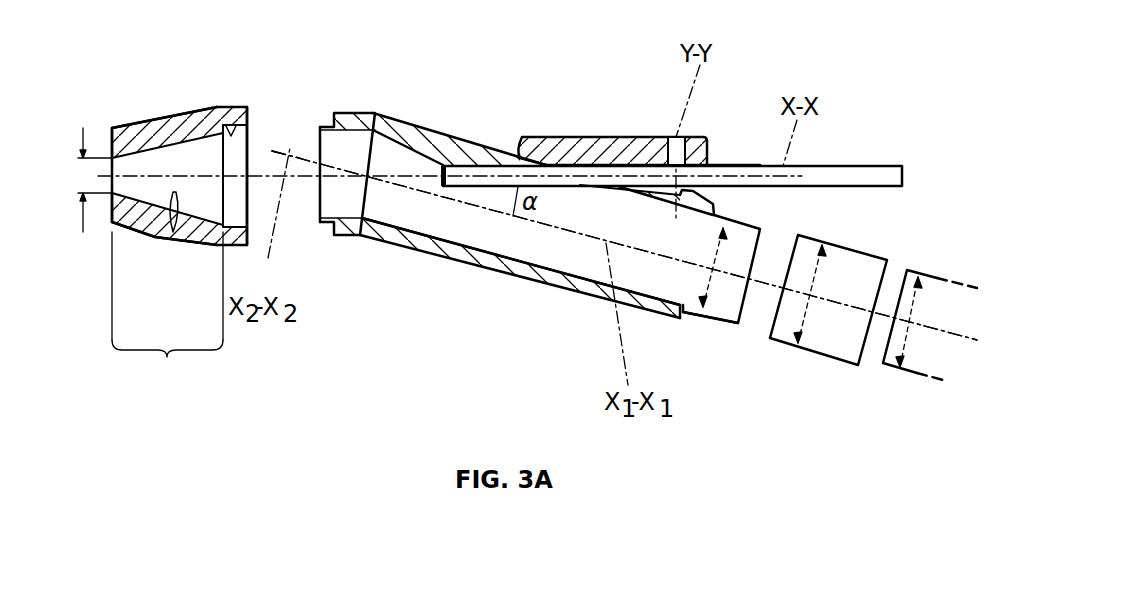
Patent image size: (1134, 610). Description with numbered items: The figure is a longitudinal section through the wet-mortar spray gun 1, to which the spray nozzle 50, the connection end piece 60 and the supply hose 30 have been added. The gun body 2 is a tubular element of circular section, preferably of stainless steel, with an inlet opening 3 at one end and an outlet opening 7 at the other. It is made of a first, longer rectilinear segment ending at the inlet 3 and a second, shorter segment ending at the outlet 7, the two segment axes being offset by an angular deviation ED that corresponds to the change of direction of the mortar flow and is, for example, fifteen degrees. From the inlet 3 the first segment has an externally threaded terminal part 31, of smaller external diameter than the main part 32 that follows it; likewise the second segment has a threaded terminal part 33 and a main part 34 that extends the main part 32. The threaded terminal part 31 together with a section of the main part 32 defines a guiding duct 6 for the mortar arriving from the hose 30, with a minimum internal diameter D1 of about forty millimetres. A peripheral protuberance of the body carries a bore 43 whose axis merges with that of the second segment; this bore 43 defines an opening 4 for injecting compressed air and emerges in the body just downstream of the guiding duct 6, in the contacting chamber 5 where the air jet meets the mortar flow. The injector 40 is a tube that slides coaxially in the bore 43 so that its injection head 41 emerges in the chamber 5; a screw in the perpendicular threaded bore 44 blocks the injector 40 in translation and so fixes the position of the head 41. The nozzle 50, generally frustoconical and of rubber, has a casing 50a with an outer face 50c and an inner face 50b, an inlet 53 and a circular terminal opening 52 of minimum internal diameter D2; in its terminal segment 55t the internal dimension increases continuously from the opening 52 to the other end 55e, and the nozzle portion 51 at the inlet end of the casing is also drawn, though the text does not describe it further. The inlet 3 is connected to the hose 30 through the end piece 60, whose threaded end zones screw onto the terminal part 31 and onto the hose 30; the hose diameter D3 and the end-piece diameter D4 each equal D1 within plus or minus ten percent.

The gun 1 is at (423, 308).
The gun body 2 is at (582, 295).
The inlet opening 3 is at (752, 323).
The injection opening 4 is at (703, 170).
The contacting chamber 5 is at (383, 153).
The guiding duct 6 is at (546, 266).
The outlet opening 7 is at (318, 212).
The supply hose 30 is at (943, 360).
The threaded terminal part 31 is at (690, 320).
The main part 32 is at (492, 272).
The threaded terminal part 33 is at (333, 230).
The main part 34 is at (358, 236).
The injector 40 is at (868, 165).
The injection head 41 is at (443, 164).
The bore 43 is at (580, 137).
The bore 44 is at (670, 137).
The spray nozzle 50 is at (170, 105).
The casing 50a is at (137, 133).
The inner face 50b is at (179, 226).
The outer face 50c is at (137, 232).
The collet ring 51 is at (242, 108).
The terminal opening 52 is at (112, 163).
The inlet 53 is at (247, 135).
The terminal segment end 55e is at (226, 130).
The terminal segment 55t is at (167, 312).
The connection end piece 60 is at (842, 343).
The minimum internal diameter of guiding duct D1 is at (716, 308).
The minimum internal diameter of terminal opening D2 is at (90, 196).
The minimum internal diameter of hose D3 is at (908, 322).
The minimum internal diameter of end piece D4 is at (805, 310).
The angular deviation ED is at (277, 168).